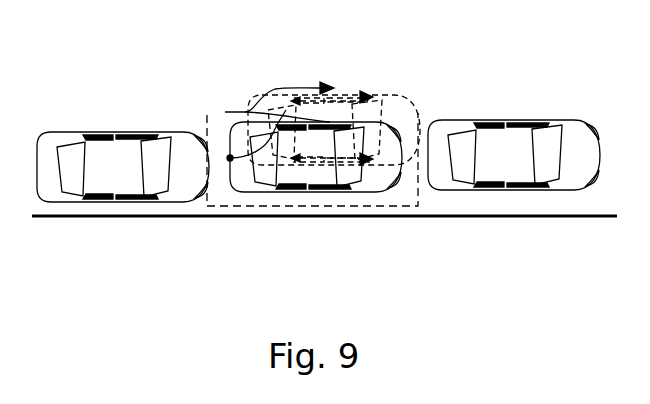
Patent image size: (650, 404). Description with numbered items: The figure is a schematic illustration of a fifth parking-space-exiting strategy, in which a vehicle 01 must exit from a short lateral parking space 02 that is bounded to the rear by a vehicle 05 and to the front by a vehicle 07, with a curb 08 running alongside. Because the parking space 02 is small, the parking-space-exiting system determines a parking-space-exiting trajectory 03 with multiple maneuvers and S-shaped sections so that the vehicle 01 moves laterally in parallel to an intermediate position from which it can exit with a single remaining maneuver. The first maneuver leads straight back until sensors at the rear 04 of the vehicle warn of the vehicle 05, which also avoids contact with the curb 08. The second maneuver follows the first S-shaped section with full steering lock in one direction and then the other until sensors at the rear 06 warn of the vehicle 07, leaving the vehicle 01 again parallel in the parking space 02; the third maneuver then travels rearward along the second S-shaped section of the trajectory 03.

The vehicle 01 is at (345, 142).
The parking space 02 is at (419, 190).
The parking-space-exiting trajectory 03 is at (280, 90).
The rear of the vehicle 04 is at (230, 158).
The vehicle bounding the parking space to the rear 05 is at (105, 178).
The rear of the vehicle 06 is at (396, 137).
The vehicle bounding the parking space to the front 07 is at (510, 155).
The curb 08 is at (518, 217).